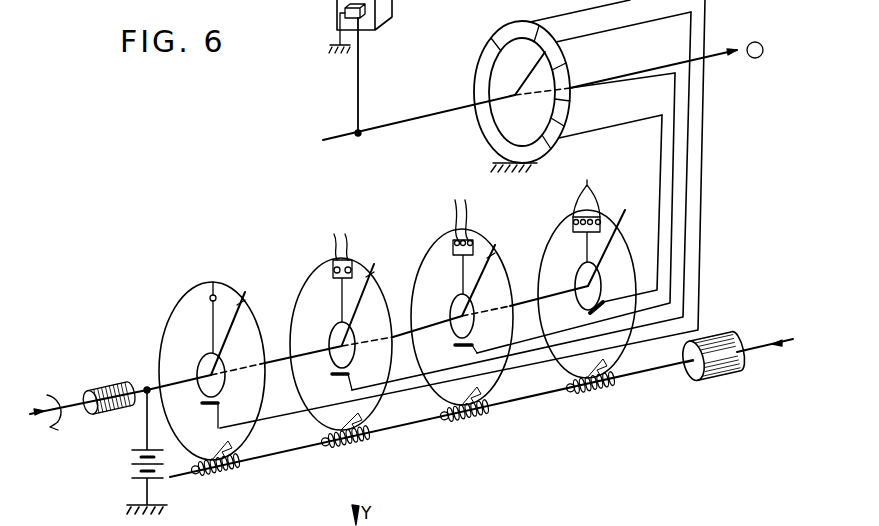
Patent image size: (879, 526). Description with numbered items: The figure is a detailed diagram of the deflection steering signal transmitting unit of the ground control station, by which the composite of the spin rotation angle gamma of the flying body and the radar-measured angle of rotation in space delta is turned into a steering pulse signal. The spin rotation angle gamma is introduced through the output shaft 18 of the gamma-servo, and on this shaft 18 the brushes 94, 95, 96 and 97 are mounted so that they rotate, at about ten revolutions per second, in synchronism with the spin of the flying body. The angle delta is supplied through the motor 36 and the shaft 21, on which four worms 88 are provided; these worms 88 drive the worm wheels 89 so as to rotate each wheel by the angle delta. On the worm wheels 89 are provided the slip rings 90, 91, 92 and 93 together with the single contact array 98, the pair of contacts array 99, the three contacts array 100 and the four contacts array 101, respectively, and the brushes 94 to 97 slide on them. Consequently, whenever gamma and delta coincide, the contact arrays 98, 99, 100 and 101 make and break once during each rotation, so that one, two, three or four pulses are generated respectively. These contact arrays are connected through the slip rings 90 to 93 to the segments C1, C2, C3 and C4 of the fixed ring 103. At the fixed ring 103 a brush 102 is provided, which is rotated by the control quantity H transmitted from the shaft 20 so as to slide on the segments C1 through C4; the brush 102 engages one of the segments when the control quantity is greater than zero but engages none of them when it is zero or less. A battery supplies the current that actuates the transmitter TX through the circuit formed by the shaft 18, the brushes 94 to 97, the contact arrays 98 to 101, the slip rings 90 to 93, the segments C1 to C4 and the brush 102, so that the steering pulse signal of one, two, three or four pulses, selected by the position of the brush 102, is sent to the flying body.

The output shaft 18 is at (72, 403).
The shaft 20 is at (736, 46).
The shaft 21 is at (538, 396).
The motor 36 is at (722, 374).
The worms 88 is at (220, 474).
The worm wheels 89 is at (248, 432).
The slip ring 90 is at (204, 358).
The slip ring 91 is at (331, 330).
The slip ring 92 is at (451, 308).
The slip ring 93 is at (576, 278).
The brush 94 is at (234, 323).
The brush 95 is at (357, 297).
The brush 96 is at (483, 274).
The brush 97 is at (610, 242).
The single contact array 98 is at (213, 282).
The pair of contacts array 99 is at (339, 266).
The three contacts array 100 is at (470, 235).
The four contacts array 101 is at (590, 210).
The brush 102 is at (541, 72).
The fixed ring 103 is at (479, 44).
The segment C1 is at (524, 28).
The segment C2 is at (558, 52).
The segment C3 is at (568, 97).
The segment C4 is at (553, 135).
The transmitter TX is at (362, 68).